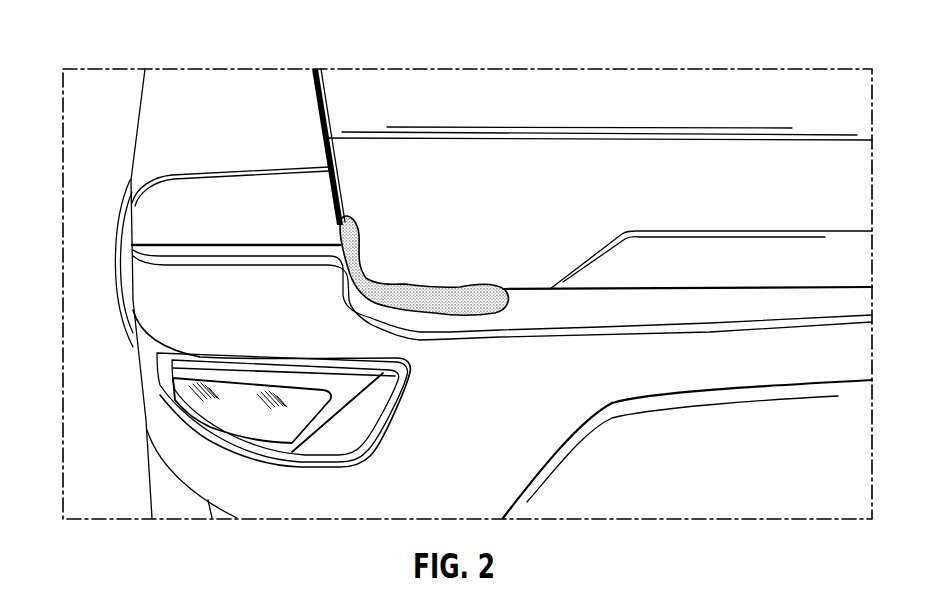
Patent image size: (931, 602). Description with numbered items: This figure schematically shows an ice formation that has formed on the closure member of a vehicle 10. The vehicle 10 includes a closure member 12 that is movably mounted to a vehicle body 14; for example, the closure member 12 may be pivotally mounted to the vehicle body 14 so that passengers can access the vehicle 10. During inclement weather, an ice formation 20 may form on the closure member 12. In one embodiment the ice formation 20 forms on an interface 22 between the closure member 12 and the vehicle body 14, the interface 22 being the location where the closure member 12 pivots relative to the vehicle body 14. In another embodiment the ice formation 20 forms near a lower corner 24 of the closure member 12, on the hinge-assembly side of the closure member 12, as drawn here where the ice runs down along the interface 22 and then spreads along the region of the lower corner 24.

The vehicle 10 is at (101, 30).
The closure member 12 is at (595, 107).
The vehicle body 14 is at (262, 145).
The ice formation 20 is at (432, 281).
The interface 22 is at (338, 186).
The lower corner 24 is at (373, 304).